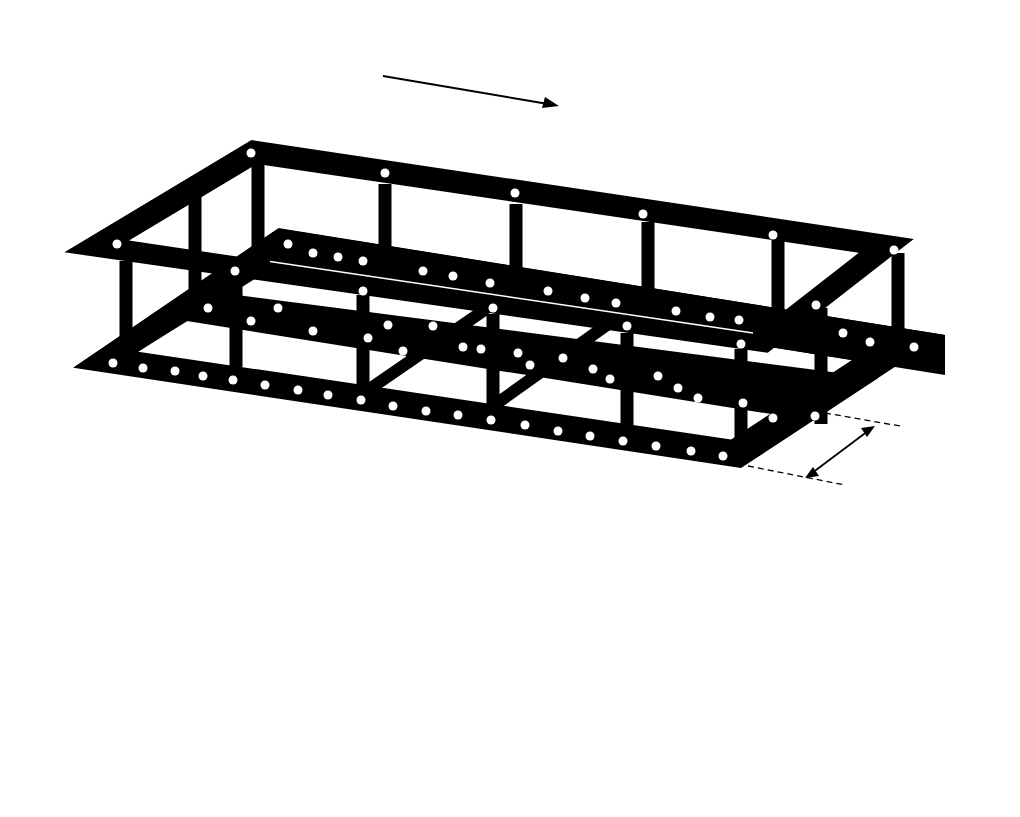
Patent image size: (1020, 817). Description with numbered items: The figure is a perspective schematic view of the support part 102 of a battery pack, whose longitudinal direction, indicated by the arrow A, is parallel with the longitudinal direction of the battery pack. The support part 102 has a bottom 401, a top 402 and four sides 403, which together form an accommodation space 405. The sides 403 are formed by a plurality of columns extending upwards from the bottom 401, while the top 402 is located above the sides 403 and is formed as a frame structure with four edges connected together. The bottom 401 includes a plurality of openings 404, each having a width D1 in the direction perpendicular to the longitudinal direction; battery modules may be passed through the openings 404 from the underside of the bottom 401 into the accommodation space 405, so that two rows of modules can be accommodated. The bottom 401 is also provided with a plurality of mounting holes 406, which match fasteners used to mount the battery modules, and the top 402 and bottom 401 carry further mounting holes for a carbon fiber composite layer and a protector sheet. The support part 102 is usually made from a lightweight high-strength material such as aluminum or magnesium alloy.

The support part 102 is at (262, 53).
The bottom 401 is at (692, 452).
The top 402 is at (823, 222).
The sides 403 is at (546, 255).
The openings 404 is at (782, 360).
The accommodation space 405 is at (304, 208).
The mounting holes 406 is at (128, 370).